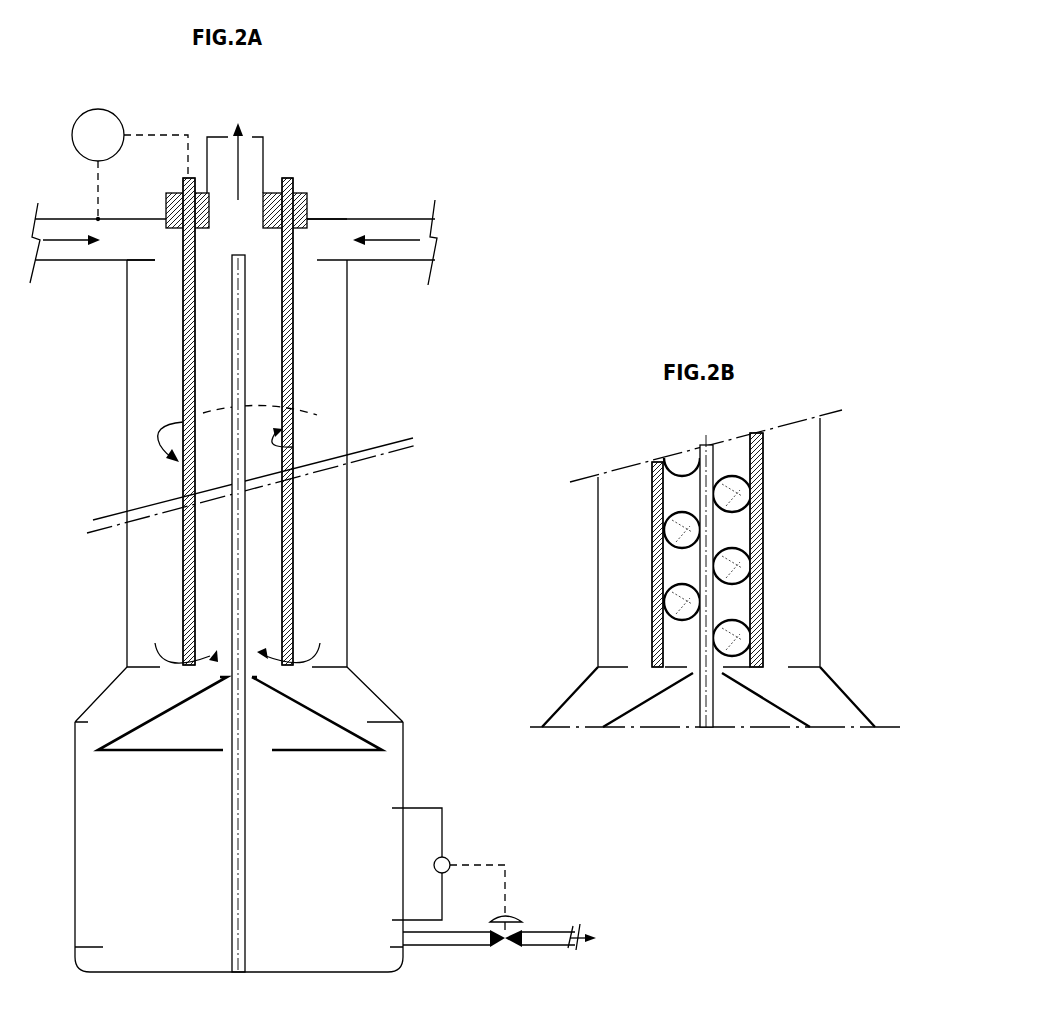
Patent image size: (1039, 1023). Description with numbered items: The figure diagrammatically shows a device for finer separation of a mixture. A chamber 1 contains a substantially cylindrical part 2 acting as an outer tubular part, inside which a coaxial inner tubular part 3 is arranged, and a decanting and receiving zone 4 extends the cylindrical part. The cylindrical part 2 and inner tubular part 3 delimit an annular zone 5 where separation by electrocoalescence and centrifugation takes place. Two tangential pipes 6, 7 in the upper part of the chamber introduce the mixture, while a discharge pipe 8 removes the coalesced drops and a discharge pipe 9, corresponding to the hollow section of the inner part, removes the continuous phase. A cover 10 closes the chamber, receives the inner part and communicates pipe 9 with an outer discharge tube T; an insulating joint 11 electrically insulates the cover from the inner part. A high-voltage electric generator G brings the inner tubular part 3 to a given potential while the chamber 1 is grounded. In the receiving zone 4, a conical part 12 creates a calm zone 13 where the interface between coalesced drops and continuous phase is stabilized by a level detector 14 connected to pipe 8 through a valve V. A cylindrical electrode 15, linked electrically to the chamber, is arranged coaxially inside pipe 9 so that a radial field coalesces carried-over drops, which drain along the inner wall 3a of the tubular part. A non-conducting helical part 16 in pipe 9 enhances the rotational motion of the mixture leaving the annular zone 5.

In FIG. 2A, the chamber 1 is at (488, 338).
In FIG. 2A, the cylindrical part 2 is at (350, 338).
In FIG. 2B, the cylindrical part 2 is at (598, 508).
In FIG. 2A, the inner tubular part 3 is at (293, 380).
In FIG. 2B, the inner tubular part 3 is at (652, 557).
In FIG. 2A, the inner wall 3a is at (297, 447).
In FIG. 2A, the decanting and receiving zone 4 is at (403, 757).
In FIG. 2A, the annular zone 5 is at (320, 498).
In FIG. 2B, the annular zone 5 is at (622, 612).
In FIG. 2A, the pipe 6 is at (398, 218).
In FIG. 2A, the pipe 7 is at (60, 228).
In FIG. 2A, the discharge pipe 8 is at (547, 930).
In FIG. 2A, the discharge pipe 9 is at (270, 550).
In FIG. 2A, the cover 10 is at (337, 218).
In FIG. 2A, the insulating joint 11 is at (307, 200).
In FIG. 2A, the conical part 12 is at (333, 722).
In FIG. 2B, the conical part 12 is at (630, 713).
In FIG. 2A, the calm zone 13 is at (184, 883).
In FIG. 2A, the level detector 14 is at (457, 836).
In FIG. 2A, the cylindrical electrode 15 is at (247, 598).
In FIG. 2B, the cylindrical electrode 15 is at (710, 697).
In FIG. 2B, the helical part 16 is at (763, 545).
In FIG. 2A, the high-voltage electric generator G is at (130, 165).
In FIG. 2A, the outer discharge tube T is at (265, 158).
In FIG. 2A, the valve V is at (462, 921).